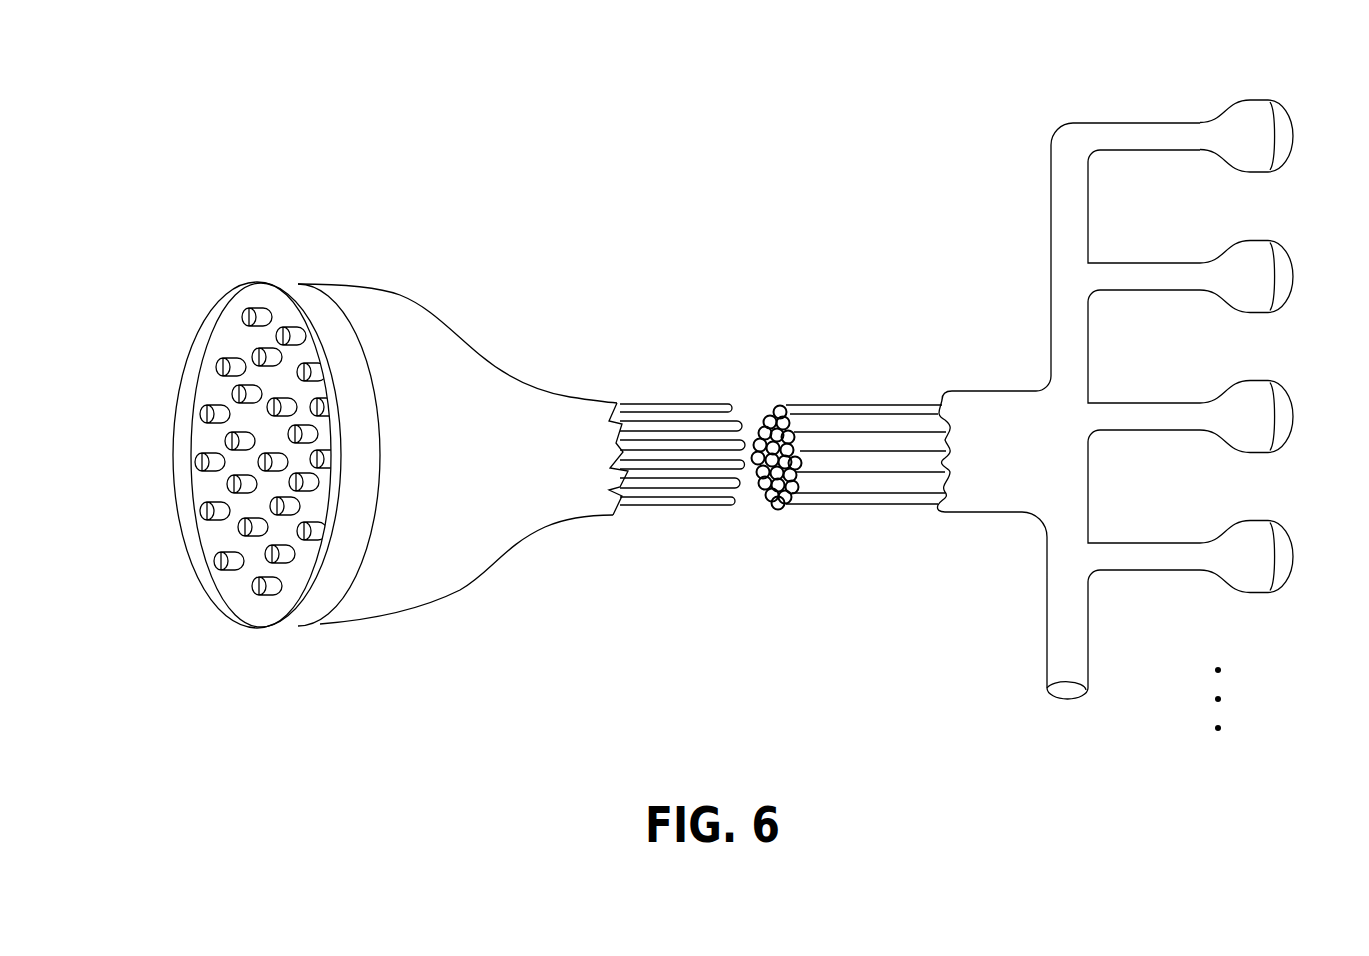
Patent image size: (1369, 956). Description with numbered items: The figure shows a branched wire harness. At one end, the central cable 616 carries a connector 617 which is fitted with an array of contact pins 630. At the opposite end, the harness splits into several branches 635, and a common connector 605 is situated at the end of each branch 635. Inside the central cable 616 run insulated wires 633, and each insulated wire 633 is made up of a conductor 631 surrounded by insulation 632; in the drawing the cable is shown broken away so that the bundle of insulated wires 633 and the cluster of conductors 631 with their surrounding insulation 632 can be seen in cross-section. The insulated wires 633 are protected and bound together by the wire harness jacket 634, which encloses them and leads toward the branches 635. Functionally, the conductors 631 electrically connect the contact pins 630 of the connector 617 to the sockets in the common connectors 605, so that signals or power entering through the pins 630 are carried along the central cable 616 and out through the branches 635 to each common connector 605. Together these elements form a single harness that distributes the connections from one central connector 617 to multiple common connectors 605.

The common connector 605 is at (1287, 109).
The central cable 616 is at (445, 322).
The connector 617 is at (295, 282).
The contact pins 630 is at (197, 463).
The conductor 631 is at (798, 406).
The insulation 632 is at (778, 407).
The insulated wires 633 is at (883, 406).
The wire harness jacket 634 is at (972, 390).
The branch 635 is at (1051, 205).